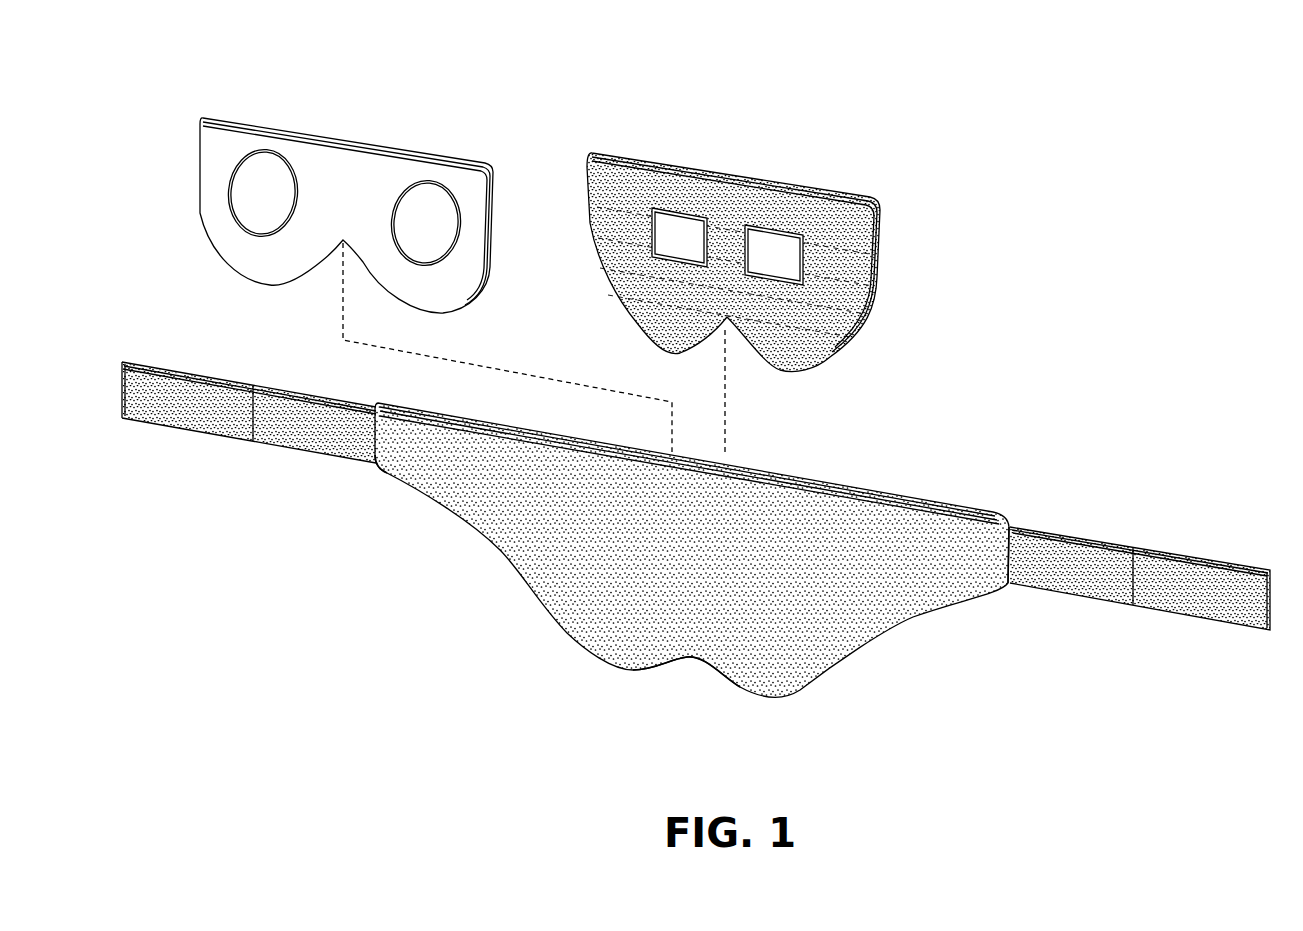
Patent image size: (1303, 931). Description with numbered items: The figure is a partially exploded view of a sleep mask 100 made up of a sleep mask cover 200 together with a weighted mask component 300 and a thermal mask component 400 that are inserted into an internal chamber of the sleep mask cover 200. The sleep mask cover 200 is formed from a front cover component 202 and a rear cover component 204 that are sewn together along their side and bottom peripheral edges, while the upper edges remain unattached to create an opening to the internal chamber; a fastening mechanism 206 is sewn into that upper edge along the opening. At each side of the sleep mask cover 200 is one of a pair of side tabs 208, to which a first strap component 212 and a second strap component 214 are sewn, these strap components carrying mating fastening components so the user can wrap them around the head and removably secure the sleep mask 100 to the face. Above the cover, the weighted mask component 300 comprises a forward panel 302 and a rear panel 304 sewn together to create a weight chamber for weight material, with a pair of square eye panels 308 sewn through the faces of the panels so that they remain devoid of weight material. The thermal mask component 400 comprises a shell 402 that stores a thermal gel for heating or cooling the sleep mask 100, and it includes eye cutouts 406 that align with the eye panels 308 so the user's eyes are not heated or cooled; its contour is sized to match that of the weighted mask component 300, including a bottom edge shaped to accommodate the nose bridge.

The sleep mask 100 is at (1158, 154).
The sleep mask cover 200 is at (696, 547).
The front cover component 202 is at (692, 550).
The rear cover component 204 is at (663, 670).
The fastening mechanism 206 is at (857, 490).
The side tabs 208 is at (418, 490).
The first strap component 212 is at (310, 397).
The second strap component 214 is at (1085, 537).
The weighted mask component 300 is at (761, 236).
The forward panel 302 is at (733, 262).
The rear panel 304 is at (877, 277).
The eye panels 308 is at (727, 246).
The thermal mask component 400 is at (346, 182).
The shell 402 is at (346, 215).
The eye cutouts 406 is at (426, 260).